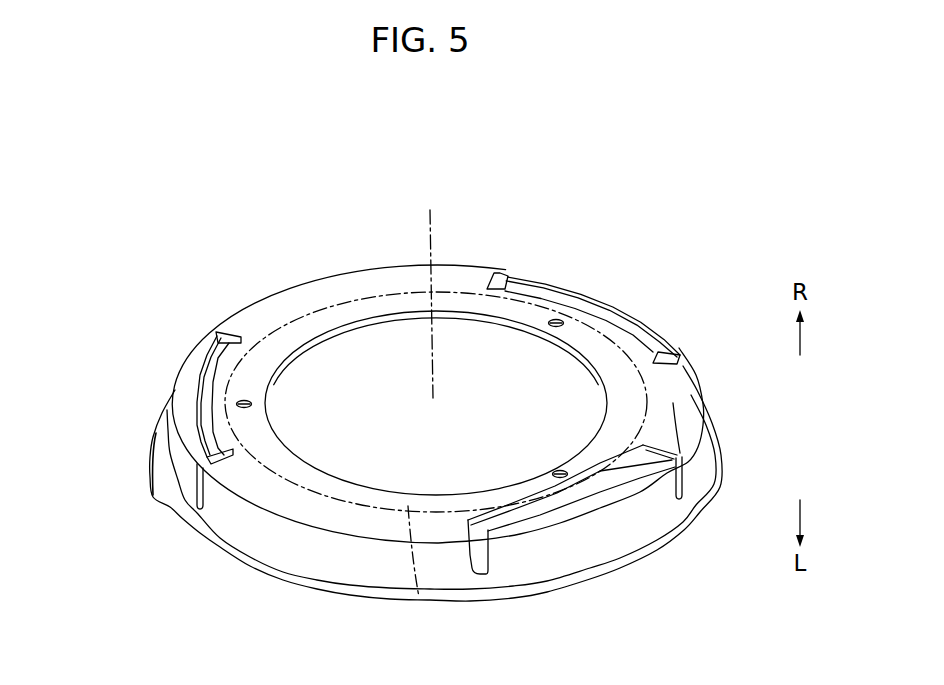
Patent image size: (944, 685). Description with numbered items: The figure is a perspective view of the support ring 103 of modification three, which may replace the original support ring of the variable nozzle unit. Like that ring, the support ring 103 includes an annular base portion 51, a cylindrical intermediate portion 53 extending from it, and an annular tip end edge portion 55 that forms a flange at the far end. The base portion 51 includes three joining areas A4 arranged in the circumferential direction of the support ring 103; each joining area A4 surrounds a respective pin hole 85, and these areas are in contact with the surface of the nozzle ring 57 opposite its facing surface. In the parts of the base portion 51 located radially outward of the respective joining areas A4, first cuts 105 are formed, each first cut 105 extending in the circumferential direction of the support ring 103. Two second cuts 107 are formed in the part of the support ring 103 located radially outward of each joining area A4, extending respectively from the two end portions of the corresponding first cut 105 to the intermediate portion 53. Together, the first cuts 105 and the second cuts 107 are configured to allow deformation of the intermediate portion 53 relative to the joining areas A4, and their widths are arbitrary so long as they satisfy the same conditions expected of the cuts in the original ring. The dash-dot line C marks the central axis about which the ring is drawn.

The support ring 103 is at (308, 276).
The annular base portion 51 is at (266, 312).
The cylindrical intermediate portion 53 is at (277, 544).
The annular tip end edge portion 55 is at (335, 589).
The nozzle ring 57 is at (419, 597).
The first cut 105 is at (620, 327).
The second cut 107 is at (500, 279).
The pin hole 85 is at (556, 320).
The joining area A4 is at (245, 389).
The center axis C is at (433, 216).